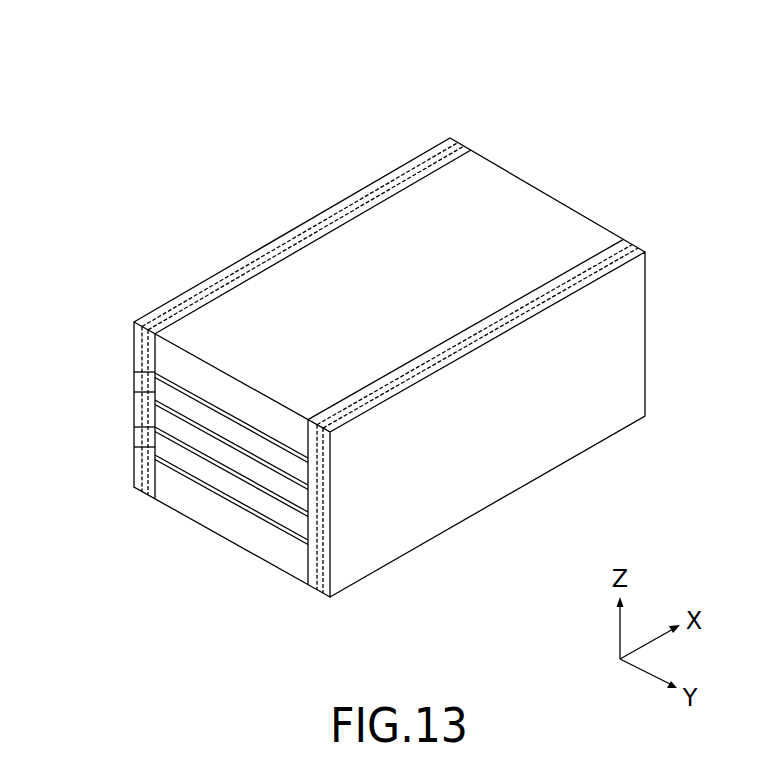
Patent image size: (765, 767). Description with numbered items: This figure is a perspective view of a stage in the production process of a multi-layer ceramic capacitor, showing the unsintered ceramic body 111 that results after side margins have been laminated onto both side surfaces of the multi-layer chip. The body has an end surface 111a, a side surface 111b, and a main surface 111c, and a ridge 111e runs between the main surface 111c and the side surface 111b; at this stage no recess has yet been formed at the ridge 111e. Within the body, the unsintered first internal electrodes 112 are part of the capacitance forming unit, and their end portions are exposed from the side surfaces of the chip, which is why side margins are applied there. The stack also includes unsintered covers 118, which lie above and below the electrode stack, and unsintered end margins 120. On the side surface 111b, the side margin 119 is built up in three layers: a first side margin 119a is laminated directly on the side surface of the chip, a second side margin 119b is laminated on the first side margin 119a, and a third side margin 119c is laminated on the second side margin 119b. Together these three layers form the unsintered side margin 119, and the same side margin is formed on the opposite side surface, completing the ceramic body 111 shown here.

The ceramic body 111 is at (530, 122).
The end surface 111a is at (273, 555).
The side surface 111b is at (618, 410).
The main surface 111c is at (320, 287).
The ridge 111e is at (357, 178).
The first internal electrode 112 is at (134, 372).
The cover 118 is at (248, 408).
The side margin 119 is at (455, 584).
The first side margin 119a is at (318, 576).
The second side margin 119b is at (326, 566).
The third side margin 119c is at (333, 554).
The end margin 120 is at (212, 417).